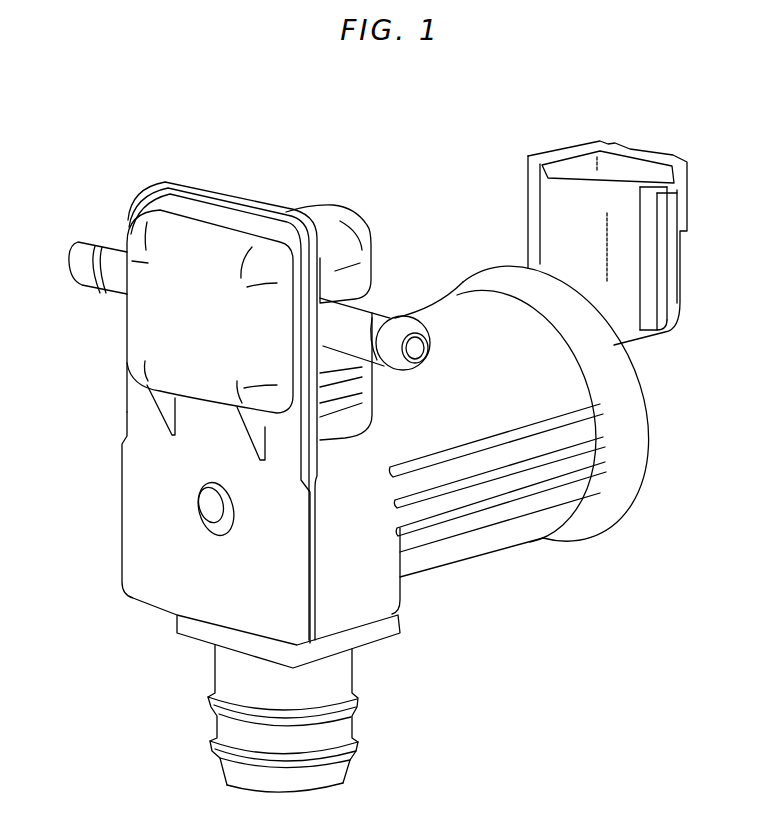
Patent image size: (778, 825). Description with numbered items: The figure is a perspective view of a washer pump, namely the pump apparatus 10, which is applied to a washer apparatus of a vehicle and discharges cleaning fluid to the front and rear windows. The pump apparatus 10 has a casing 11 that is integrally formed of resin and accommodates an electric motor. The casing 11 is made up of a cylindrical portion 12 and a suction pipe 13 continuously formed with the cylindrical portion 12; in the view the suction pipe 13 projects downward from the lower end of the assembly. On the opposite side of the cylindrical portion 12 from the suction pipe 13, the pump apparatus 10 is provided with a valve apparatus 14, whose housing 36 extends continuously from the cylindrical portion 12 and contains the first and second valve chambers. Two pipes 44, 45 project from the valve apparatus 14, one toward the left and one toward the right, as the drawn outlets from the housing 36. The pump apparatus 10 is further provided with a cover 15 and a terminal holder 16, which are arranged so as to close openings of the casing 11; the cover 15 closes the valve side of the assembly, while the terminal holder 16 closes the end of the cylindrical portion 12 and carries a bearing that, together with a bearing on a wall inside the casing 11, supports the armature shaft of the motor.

The pump apparatus 10 is at (447, 640).
The casing 11 is at (432, 255).
The cylindrical portion 12 is at (514, 537).
The suction pipe 13 is at (228, 678).
The valve apparatus 14 is at (317, 160).
The cover 15 is at (108, 456).
The terminal holder 16 is at (669, 411).
The housing 36 is at (342, 222).
The first pipe 44 is at (122, 245).
The second pipe 45 is at (375, 318).